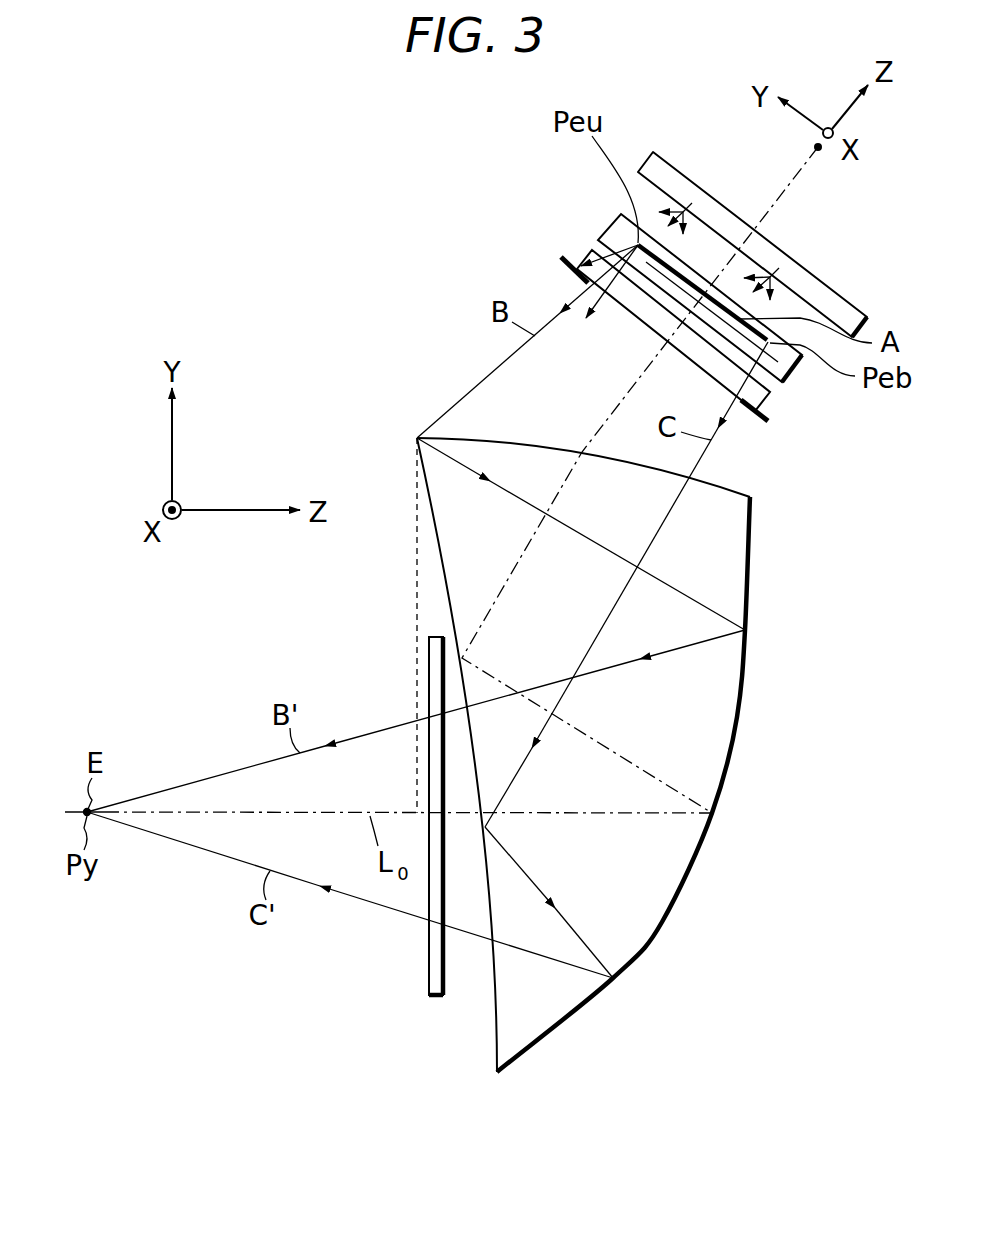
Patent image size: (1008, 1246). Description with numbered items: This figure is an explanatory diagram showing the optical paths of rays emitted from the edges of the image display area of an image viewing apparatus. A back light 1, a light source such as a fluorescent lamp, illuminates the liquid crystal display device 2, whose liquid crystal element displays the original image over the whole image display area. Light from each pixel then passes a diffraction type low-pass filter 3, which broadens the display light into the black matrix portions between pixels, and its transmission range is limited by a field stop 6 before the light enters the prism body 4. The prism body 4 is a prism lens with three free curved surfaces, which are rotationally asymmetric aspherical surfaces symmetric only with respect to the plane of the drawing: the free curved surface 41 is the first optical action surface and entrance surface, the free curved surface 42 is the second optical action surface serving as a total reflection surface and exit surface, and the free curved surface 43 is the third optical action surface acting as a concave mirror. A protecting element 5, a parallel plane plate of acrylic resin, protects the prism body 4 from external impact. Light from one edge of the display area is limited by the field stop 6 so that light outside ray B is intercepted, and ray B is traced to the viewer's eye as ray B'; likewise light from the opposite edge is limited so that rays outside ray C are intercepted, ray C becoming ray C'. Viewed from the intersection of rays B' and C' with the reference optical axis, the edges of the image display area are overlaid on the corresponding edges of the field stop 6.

The back light 1 is at (652, 158).
The liquid crystal display device 2 is at (613, 226).
The diffraction type low-pass filter 3 is at (758, 390).
The prism body 4 is at (630, 771).
The protecting element 5 is at (433, 996).
The field stop 6 is at (768, 420).
The free curved surface 41 is at (752, 490).
The free curved surface 42 is at (493, 1045).
The free curved surface 43 is at (735, 750).